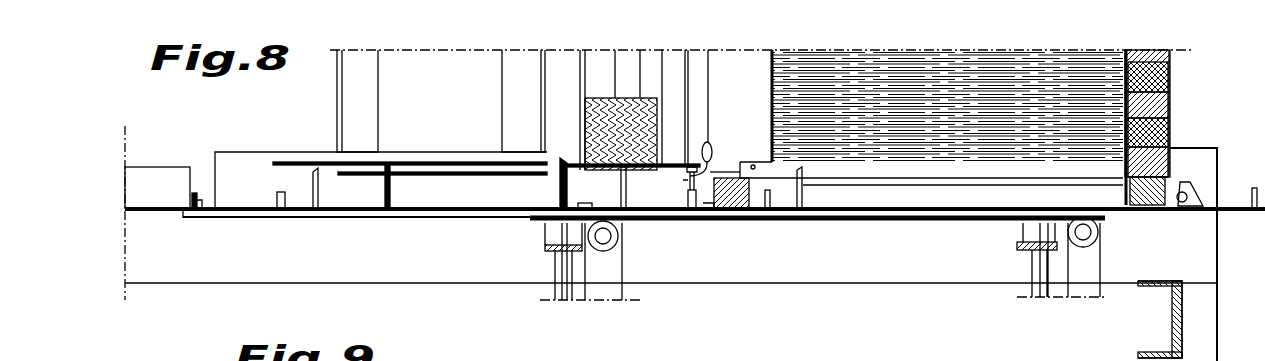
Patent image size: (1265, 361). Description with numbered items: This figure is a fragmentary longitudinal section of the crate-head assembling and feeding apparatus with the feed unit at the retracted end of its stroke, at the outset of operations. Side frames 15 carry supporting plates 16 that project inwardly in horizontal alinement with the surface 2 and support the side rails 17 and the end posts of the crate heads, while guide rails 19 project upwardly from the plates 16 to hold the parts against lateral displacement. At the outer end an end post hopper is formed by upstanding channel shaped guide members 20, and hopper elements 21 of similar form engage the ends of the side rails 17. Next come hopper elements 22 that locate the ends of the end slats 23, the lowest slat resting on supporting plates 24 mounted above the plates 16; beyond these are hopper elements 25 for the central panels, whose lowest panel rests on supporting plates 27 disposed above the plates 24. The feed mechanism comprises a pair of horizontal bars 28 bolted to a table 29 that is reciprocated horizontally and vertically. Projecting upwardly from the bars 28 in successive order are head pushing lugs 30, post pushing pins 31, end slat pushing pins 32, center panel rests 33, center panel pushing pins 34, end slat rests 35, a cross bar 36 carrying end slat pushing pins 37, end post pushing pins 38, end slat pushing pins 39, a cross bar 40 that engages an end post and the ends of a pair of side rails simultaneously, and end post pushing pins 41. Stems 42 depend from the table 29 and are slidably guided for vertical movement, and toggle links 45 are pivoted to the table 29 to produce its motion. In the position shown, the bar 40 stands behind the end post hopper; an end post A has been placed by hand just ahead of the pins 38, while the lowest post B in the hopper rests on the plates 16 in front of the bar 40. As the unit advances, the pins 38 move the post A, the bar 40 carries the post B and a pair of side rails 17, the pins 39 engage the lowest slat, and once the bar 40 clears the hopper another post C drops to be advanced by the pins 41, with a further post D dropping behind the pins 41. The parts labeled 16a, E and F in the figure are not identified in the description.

The surface 2 is at (156, 212).
The side frames 15 is at (818, 290).
The supporting plates 16 is at (462, 211).
The lower plate 16a is at (210, 207).
The side rails 17 is at (918, 80).
The guide rails 19 is at (257, 157).
The channel shaped guide members 20 is at (1181, 160).
The hopper elements 21 is at (738, 72).
The hopper elements 22 is at (598, 65).
The end slats 23 is at (637, 97).
The supporting plates 24 is at (418, 176).
The hopper elements 25 is at (363, 96).
The supporting plates 27 is at (297, 161).
The horizontal bars 28 is at (506, 213).
The table 29 is at (886, 220).
The head pushing lugs 30 is at (192, 210).
The post pushing pins 31 is at (276, 209).
The end slat pushing pins 32 is at (313, 200).
The center panel rests 33 is at (387, 186).
The center panel pushing pins 34 is at (562, 184).
The end slat rests 35 is at (628, 195).
The cross bar 36 is at (689, 193).
The end slat pushing pins 37 is at (690, 172).
The end post pushing pins 38 is at (766, 206).
The end slat pushing pins 39 is at (799, 205).
The cross bar 40 is at (1183, 208).
The end post pushing pins 41 is at (1253, 205).
The stems 42 is at (558, 277).
The toggle links 45 is at (604, 270).
The end post A is at (721, 210).
The post B is at (1138, 207).
The post C is at (1198, 148).
The post D is at (1170, 130).
The layer E is at (1170, 103).
The layer F is at (1170, 77).